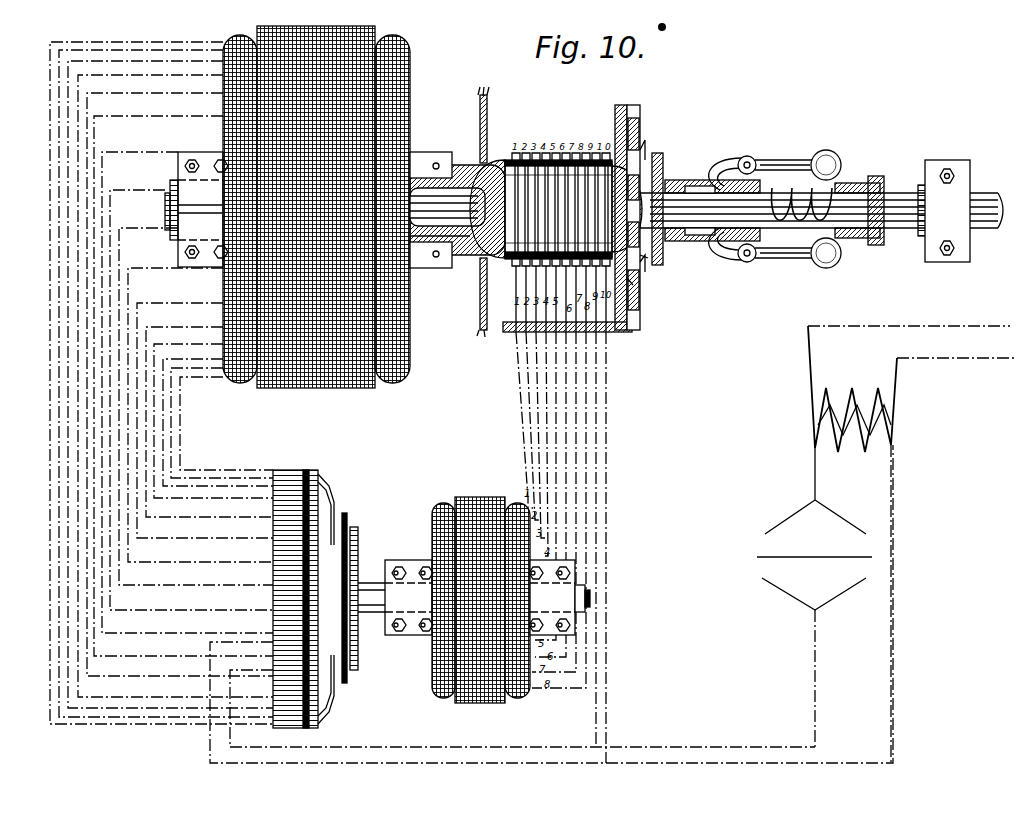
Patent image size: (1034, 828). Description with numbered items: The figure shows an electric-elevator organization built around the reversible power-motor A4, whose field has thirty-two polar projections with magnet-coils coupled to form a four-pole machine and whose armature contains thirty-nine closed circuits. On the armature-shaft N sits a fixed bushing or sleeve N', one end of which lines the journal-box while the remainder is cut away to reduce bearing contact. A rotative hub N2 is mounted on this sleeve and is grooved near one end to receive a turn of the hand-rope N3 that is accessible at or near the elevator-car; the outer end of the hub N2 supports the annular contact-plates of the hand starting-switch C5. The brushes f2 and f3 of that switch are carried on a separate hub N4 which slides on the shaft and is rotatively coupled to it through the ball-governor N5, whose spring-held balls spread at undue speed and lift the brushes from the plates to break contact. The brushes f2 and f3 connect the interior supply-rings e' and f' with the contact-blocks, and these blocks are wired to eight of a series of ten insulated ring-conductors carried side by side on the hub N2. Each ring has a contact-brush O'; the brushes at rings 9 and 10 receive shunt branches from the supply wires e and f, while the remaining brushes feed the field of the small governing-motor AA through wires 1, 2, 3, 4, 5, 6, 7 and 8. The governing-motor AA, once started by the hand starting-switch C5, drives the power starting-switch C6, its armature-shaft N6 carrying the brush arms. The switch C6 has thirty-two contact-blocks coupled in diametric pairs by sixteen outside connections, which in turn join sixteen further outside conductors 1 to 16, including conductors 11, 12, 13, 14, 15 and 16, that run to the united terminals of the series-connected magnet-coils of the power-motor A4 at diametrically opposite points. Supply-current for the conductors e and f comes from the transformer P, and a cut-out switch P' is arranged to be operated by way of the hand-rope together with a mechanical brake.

The power-motor A4 is at (316, 194).
The governing-motor AA is at (481, 587).
The armature-shaft N is at (447, 207).
The bushing or sleeve N' is at (440, 270).
The rotative hub N2 is at (465, 168).
The hand-rope N3 is at (490, 106).
The separate hub N4 is at (665, 168).
The ball-governor N5 is at (768, 158).
The armature-shaft of governing-motor N6 is at (592, 598).
The contact-brush O' is at (567, 299).
The hand starting-switch C5 is at (640, 130).
The power starting-switch C6 is at (315, 585).
The interior supply-ring f' is at (646, 310).
The brush f2 is at (644, 268).
The brush f3 is at (652, 150).
The supply or line wire e is at (522, 709).
The interior supply-ring e' is at (670, 269).
The supply or line wire f is at (551, 612).
The transformer P is at (912, 389).
The cut-out switch P' is at (824, 604).
The outside conductor 1 is at (161, 376).
The outside conductor 2 is at (166, 381).
The outside conductor 3 is at (170, 382).
The outside conductor 4 is at (175, 384).
The outside conductor 5 is at (180, 384).
The outside conductor 6 is at (183, 386).
The outside conductor 7 is at (187, 392).
The outside conductor 8 is at (191, 400).
The ring-conductor 9 is at (196, 406).
The ring-conductor 10 is at (200, 415).
The outside conductor 11 is at (205, 420).
The outside conductor 12 is at (209, 422).
The outside conductor 13 is at (213, 418).
The outside conductor 14 is at (218, 419).
The outside conductor 15 is at (222, 420).
The outside conductor 16 is at (226, 422).